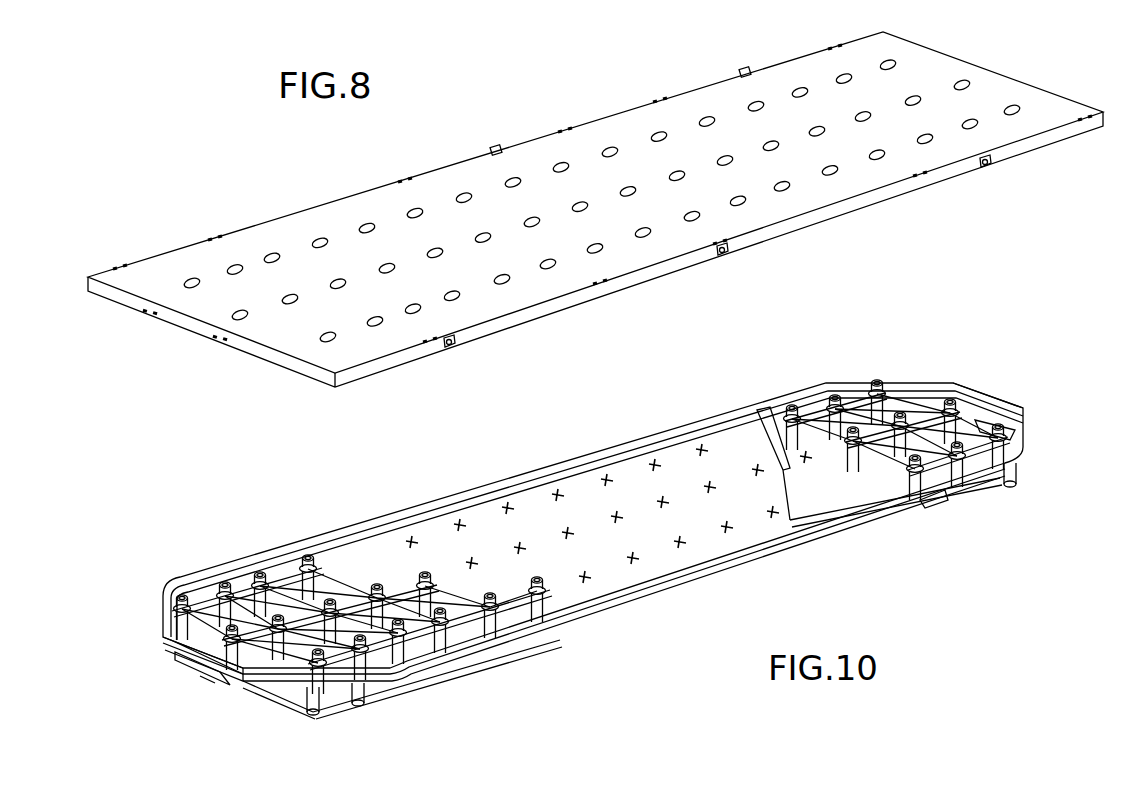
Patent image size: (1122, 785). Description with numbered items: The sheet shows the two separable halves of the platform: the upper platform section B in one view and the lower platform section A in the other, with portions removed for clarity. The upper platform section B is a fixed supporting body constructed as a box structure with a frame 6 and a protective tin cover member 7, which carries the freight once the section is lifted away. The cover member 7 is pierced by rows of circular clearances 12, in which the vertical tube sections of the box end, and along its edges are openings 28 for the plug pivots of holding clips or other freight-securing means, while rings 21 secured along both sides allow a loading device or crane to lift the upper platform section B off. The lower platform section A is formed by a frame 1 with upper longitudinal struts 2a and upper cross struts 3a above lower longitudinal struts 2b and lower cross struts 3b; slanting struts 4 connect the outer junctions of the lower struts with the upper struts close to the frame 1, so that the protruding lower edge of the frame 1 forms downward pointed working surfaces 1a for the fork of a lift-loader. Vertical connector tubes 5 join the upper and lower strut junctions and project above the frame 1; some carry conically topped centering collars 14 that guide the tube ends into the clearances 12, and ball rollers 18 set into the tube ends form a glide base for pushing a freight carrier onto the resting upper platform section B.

In FIG. 8, the frame 6 is at (262, 355).
In FIG. 8, the protective tin cover member 7 is at (333, 218).
In FIG. 8, the circular clearance 12 is at (232, 268).
In FIG. 8, the ring 21 is at (497, 148).
In FIG. 8, the opening 28 is at (415, 178).
In FIG. 8, the upper platform section B is at (628, 108).
In FIG. 10, the frame 1 is at (815, 525).
In FIG. 10, the working surface 1a is at (178, 672).
In FIG. 10, the upper longitudinal strut 2a is at (245, 585).
In FIG. 10, the lower longitudinal strut 2b is at (462, 655).
In FIG. 10, the upper cross strut 3a is at (330, 590).
In FIG. 10, the lower cross strut 3b is at (282, 700).
In FIG. 10, the slanting strut 4 is at (213, 690).
In FIG. 10, the vertical connector tube 5 is at (340, 705).
In FIG. 10, the centering collar 14 is at (218, 642).
In FIG. 10, the ball roller 18 is at (442, 606).
In FIG. 10, the lower platform section A is at (612, 607).